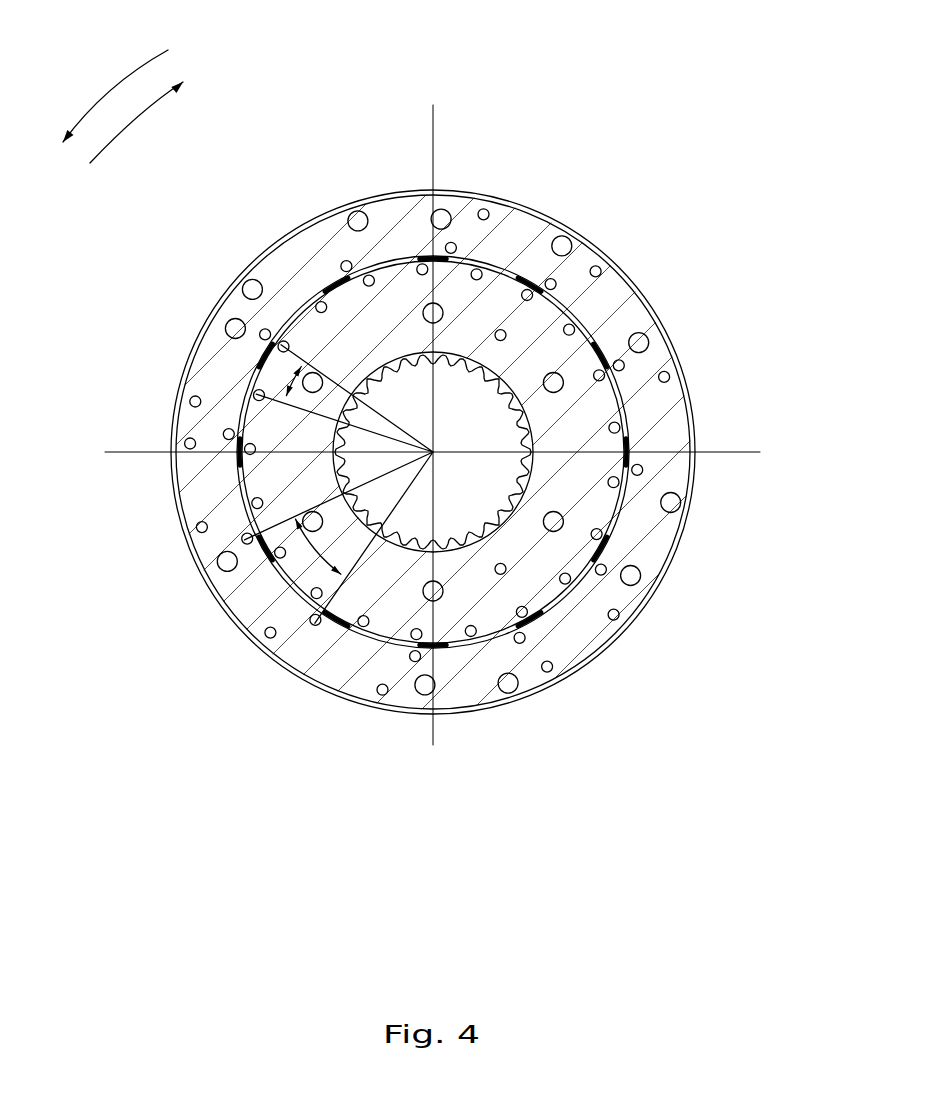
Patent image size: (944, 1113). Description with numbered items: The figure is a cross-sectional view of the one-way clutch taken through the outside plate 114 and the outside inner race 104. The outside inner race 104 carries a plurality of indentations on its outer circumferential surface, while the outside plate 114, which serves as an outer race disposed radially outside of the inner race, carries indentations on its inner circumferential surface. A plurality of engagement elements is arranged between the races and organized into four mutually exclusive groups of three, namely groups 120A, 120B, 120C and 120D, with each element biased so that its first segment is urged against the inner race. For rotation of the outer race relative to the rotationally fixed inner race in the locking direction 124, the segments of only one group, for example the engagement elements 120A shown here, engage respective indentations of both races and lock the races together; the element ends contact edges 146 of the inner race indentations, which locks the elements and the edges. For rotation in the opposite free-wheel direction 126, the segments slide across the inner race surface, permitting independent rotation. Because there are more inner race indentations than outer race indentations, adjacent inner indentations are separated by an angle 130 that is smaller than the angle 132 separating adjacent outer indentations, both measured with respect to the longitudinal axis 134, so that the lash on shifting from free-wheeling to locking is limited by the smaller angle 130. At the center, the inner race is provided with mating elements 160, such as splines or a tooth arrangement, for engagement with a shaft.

The outside inner race 104 is at (403, 325).
The outside plate 114 is at (526, 192).
The engagement elements 120A is at (433, 256).
The engagement elements 120B is at (333, 284).
The engagement elements 120C is at (266, 349).
The engagement elements 120D is at (532, 282).
The locking direction 124 is at (107, 93).
The free-wheel direction 126 is at (128, 123).
The angle 130 is at (296, 383).
The angle 132 is at (320, 553).
The longitudinal axis 134 is at (440, 446).
The edges 146 is at (602, 562).
The mating elements 160 is at (449, 533).